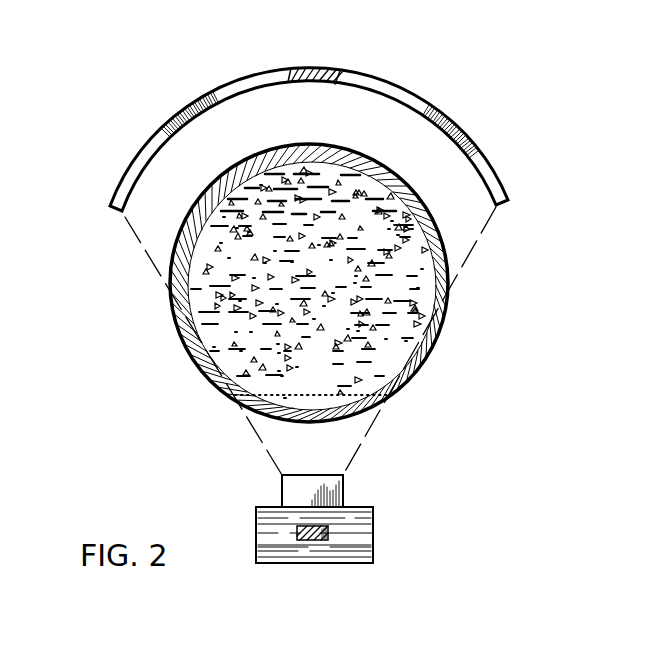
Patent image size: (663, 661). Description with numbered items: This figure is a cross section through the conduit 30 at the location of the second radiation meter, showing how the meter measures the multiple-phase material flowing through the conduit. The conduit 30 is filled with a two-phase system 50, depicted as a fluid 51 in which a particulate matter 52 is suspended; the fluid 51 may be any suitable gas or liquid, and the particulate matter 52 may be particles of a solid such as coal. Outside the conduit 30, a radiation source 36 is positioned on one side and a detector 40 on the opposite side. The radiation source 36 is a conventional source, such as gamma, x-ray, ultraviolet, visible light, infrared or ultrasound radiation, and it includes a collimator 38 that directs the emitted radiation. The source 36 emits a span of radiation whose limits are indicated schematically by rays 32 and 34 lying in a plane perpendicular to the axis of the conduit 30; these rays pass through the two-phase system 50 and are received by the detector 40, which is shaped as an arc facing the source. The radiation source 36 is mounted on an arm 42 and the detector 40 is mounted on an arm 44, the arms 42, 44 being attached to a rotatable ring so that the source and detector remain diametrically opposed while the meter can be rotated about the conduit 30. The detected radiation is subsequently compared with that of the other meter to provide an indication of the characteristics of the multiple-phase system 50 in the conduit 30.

The conduit 30 is at (197, 199).
The ray 32 is at (136, 239).
The ray 34 is at (479, 236).
The radiation source 36 is at (374, 526).
The collimator 38 is at (338, 495).
The detector 40 is at (403, 95).
The arm 42 is at (324, 541).
The arm 44 is at (313, 68).
The two-phase system 50 is at (318, 294).
The fluid 51 is at (258, 344).
The particulate matter 52 is at (263, 362).